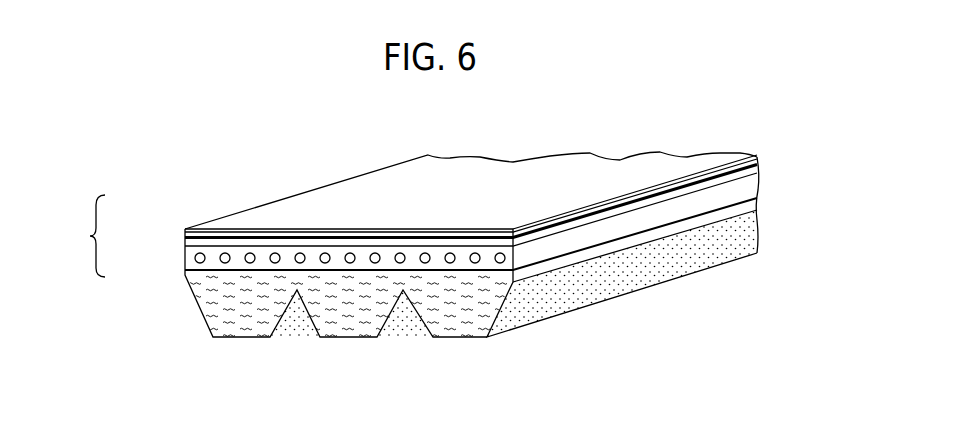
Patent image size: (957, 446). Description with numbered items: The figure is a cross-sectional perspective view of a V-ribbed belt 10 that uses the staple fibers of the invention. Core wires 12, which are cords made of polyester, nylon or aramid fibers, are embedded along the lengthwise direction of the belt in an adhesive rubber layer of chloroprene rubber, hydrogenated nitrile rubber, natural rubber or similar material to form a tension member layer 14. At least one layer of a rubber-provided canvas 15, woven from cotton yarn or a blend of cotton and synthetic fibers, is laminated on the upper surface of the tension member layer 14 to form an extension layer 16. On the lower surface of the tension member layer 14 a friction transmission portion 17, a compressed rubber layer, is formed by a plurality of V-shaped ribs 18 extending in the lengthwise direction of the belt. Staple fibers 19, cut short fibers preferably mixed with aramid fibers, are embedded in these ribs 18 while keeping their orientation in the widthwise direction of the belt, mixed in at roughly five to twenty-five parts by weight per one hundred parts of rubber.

The V-ribbed belt 10 is at (285, 215).
The core wires 12 is at (184, 270).
The tension member layer 14 is at (185, 259).
The rubber-provided canvas 15 is at (183, 240).
The extension layer 16 is at (409, 216).
The friction transmission portion 17 is at (520, 317).
The V-shaped ribs 18 is at (235, 337).
The staple fibers 19 is at (270, 310).